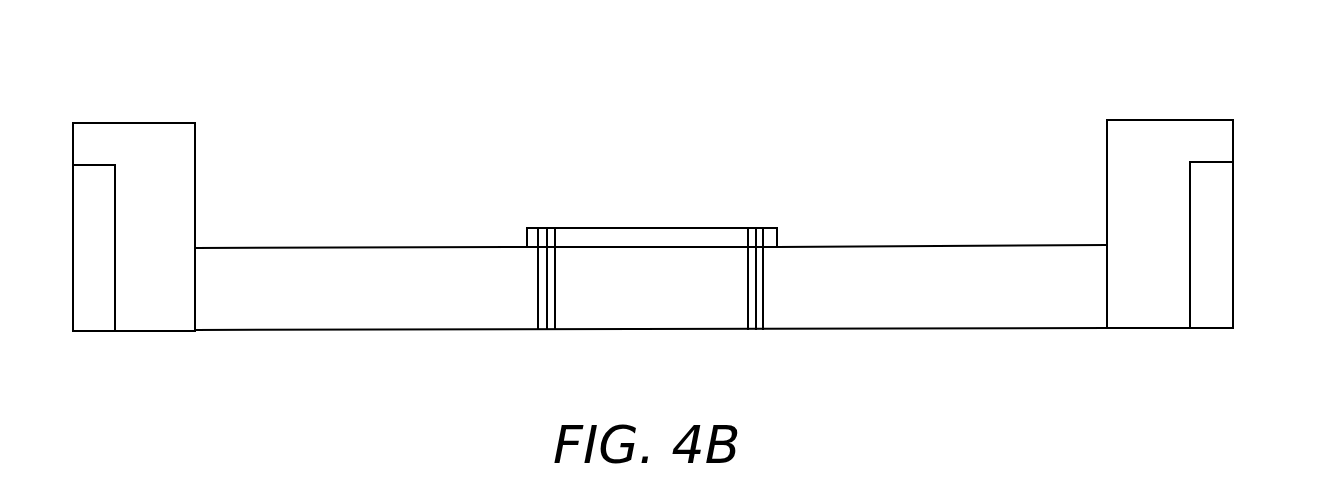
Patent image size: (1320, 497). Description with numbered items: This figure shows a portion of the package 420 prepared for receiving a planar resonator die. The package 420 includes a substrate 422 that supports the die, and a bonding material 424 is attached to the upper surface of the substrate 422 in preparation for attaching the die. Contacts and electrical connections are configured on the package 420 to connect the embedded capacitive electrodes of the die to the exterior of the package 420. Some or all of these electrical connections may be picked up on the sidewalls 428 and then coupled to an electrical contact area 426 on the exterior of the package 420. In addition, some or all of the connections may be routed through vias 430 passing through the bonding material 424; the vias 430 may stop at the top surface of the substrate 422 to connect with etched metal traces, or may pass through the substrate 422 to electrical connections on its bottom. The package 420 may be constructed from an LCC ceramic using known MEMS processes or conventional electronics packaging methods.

The package 420 is at (1180, 82).
The substrate 422 is at (907, 265).
The bonding material 424 is at (670, 240).
The electrical contact area 426 is at (1222, 247).
The sidewalls 428 is at (1217, 148).
The vias 430 is at (566, 298).